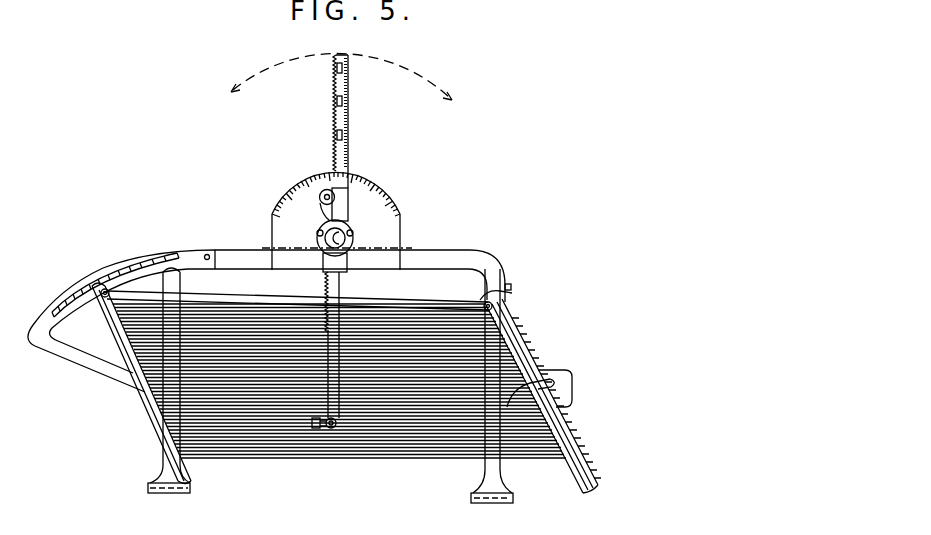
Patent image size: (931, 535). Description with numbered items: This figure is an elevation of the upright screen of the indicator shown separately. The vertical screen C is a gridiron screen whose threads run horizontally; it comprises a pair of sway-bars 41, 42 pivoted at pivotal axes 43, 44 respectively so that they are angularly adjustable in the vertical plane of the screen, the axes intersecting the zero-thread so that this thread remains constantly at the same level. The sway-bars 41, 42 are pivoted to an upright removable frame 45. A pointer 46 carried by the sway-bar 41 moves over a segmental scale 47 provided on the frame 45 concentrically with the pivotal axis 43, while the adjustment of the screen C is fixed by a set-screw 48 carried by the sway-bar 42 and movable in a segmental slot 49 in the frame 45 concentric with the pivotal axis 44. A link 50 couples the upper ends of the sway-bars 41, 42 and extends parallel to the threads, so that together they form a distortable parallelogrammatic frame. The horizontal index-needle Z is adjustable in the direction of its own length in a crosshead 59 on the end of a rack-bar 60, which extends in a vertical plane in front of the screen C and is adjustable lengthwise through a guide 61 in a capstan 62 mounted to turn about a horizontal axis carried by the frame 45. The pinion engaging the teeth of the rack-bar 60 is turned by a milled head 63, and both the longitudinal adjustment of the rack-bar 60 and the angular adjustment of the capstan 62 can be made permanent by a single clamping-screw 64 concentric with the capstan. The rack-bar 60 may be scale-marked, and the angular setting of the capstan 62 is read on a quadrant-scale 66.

The sway-bar 41 is at (117, 330).
The sway-bar 42 is at (527, 330).
The pivotal axis 43 is at (160, 422).
The pivotal axis 44 is at (555, 442).
The upright removable frame 45 is at (447, 255).
The pointer 46 is at (110, 287).
The segmental scale 47 is at (78, 285).
The set-screw 48 is at (555, 374).
The segmental slot 49 is at (565, 385).
The link 50 is at (226, 300).
The crosshead 59 is at (325, 430).
The rack-bar 60 is at (349, 124).
The guide 61 is at (348, 204).
The capstan 62 is at (353, 237).
The milled head 63 is at (320, 203).
The clamping-screw 64 is at (317, 240).
The quadrant-scale 66 is at (386, 206).
The vertical screen C is at (415, 440).
The horizontal index-needle Z is at (258, 425).